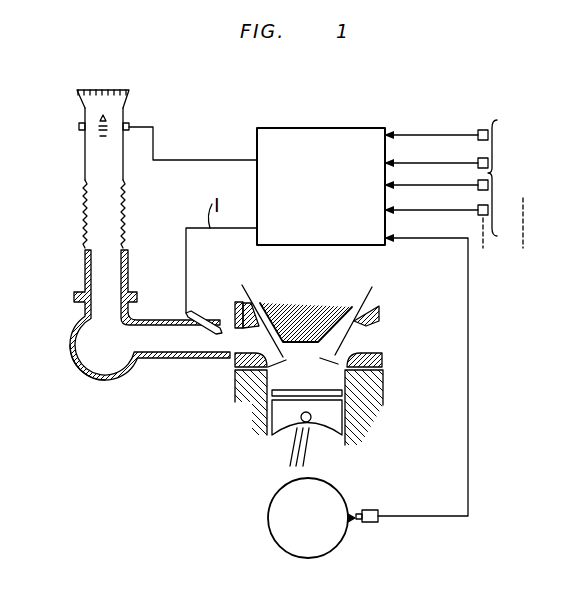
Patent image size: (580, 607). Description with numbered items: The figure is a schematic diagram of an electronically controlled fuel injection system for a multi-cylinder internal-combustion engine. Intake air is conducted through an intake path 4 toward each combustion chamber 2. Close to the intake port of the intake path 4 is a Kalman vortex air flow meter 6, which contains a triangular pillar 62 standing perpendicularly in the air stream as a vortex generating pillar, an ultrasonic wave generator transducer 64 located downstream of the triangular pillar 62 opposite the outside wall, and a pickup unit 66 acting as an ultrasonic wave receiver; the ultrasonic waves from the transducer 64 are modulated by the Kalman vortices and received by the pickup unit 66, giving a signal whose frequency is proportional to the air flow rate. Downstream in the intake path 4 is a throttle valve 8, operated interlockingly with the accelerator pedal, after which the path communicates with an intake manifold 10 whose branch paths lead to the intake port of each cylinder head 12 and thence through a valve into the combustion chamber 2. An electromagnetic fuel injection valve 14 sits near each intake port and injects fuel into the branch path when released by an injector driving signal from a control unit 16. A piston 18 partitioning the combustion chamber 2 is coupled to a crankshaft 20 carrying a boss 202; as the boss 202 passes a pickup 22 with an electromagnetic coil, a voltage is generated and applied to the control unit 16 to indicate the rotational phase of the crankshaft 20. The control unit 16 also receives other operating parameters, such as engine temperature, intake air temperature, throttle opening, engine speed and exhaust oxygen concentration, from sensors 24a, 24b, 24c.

The combustion chamber 2 is at (312, 381).
The intake path 4 is at (63, 197).
The Kalman vortex air flow meter 6 is at (70, 93).
The throttle valve 8 is at (118, 283).
The intake manifold 10 is at (113, 380).
The cylinder head 12 is at (292, 328).
The electromagnetic fuel injection valve 14 is at (205, 313).
The control unit 16 is at (345, 127).
The piston 18 is at (280, 415).
The crankshaft 20 is at (306, 556).
The pickup 22 is at (372, 523).
The sensor 24a is at (463, 140).
The sensor 24b is at (464, 165).
The sensor 24c is at (463, 184).
The triangular pillar 62 is at (102, 108).
The ultrasonic wave generator transducer 64 is at (79, 126).
The pickup unit 66 is at (129, 125).
The boss 202 is at (352, 525).